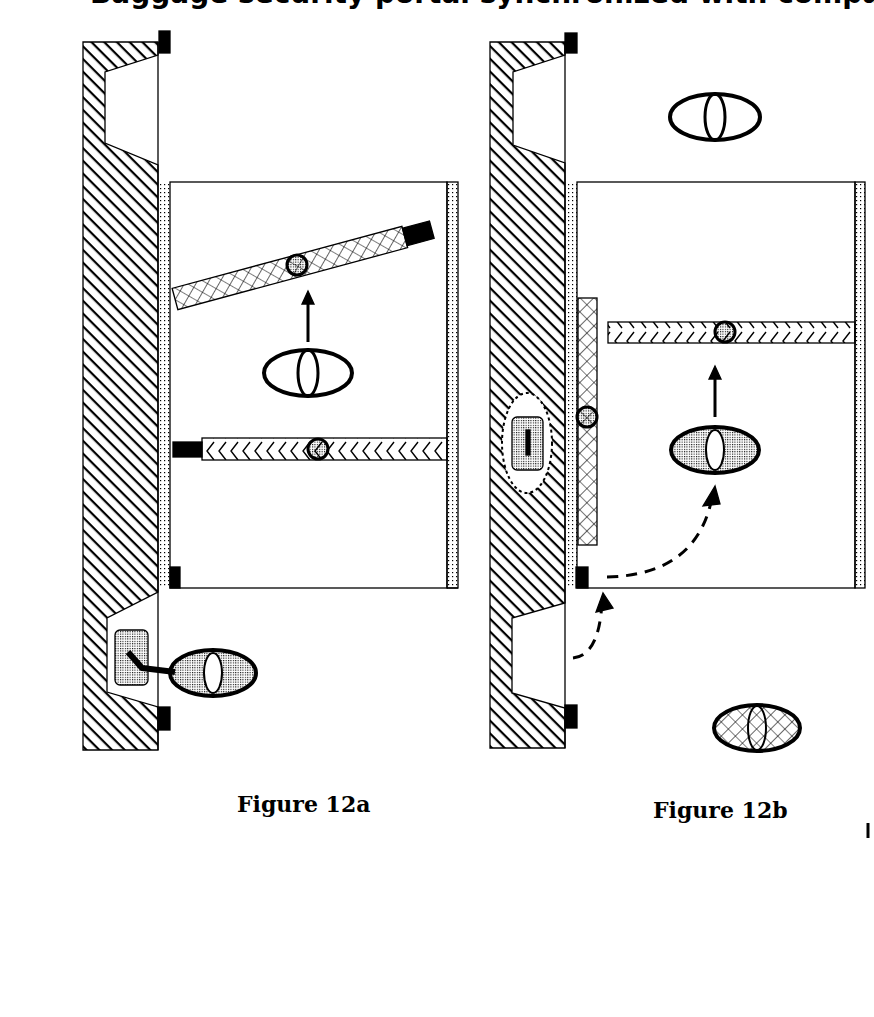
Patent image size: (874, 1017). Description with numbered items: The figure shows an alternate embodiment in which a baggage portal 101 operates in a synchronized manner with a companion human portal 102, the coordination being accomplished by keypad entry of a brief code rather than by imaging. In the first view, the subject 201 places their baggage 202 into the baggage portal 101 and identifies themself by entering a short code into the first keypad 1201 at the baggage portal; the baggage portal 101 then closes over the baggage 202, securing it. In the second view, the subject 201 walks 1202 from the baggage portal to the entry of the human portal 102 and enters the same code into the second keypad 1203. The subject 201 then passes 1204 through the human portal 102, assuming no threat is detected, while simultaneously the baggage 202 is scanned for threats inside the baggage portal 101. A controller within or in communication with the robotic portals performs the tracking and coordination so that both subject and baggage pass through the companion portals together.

In FIG. 12A, the baggage portal 101 is at (127, 97).
In FIG. 12B, the baggage portal 101 is at (480, 63).
In FIG. 12A, the human portal 102 is at (469, 685).
In FIG. 12B, the human portal 102 is at (652, 503).
In FIG. 12A, the subject 201 is at (265, 683).
In FIG. 12B, the subject 201 is at (758, 427).
In FIG. 12A, the baggage 202 is at (140, 685).
In FIG. 12B, the baggage 202 is at (505, 457).
In FIG. 12A, the Keypad_1 1201 is at (178, 727).
In FIG. 12A, the walk to human portal 1202 is at (190, 578).
In FIG. 12B, the walk to human portal 1202 is at (603, 652).
In FIG. 12A, the Keypad_2 1203 is at (168, 52).
In FIG. 12B, the Keypad_2 1203 is at (598, 568).
In FIG. 12B, the pass through human portal 1204 is at (710, 523).